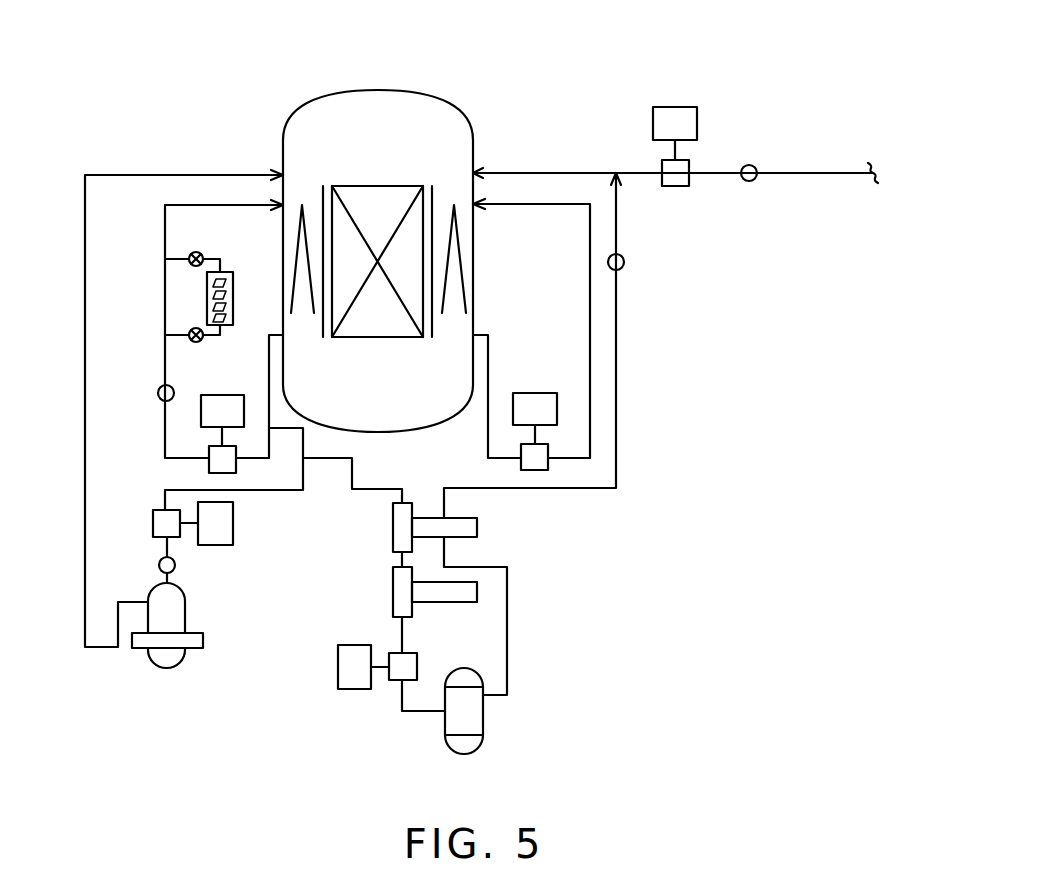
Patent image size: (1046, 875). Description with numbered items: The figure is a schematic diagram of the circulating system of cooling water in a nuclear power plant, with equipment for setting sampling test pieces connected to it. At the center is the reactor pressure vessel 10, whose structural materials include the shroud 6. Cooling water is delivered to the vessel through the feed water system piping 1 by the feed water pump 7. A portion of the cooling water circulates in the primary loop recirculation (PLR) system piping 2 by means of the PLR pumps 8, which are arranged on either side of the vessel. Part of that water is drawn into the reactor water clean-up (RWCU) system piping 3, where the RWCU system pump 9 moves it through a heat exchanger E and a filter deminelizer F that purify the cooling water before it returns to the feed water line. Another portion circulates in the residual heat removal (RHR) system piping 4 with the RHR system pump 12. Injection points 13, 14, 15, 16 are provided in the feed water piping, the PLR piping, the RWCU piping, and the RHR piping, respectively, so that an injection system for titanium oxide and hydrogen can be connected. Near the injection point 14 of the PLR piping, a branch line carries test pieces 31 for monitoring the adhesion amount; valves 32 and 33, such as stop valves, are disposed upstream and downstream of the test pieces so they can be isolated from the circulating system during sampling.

The feed water system piping 1 is at (812, 173).
The primary loop recirculation (PLR) system piping 2 is at (165, 225).
The reactor water clean-up (RWCU) system piping 3 is at (616, 374).
The residual heat removal (RHR) system piping 4 is at (85, 416).
The shroud 6 is at (323, 197).
The feed water pump 7 is at (672, 107).
The primary loop recirculation (PLR) pump 8 is at (222, 395).
The reactor water clean-up (RWCU) system pump 9 is at (338, 668).
The reactor pressure vessel 10 is at (411, 92).
The residual heat removal (RHR) system pump 12 is at (233, 523).
The injection point 13 is at (750, 165).
The injection point 14 is at (160, 386).
The injection point 15 is at (625, 262).
The injection point 16 is at (176, 565).
The test pieces 31 is at (207, 291).
The valve 32 is at (189, 335).
The valve 33 is at (189, 257).
The heat exchanger E is at (203, 640).
The filter deminelizer F is at (483, 722).